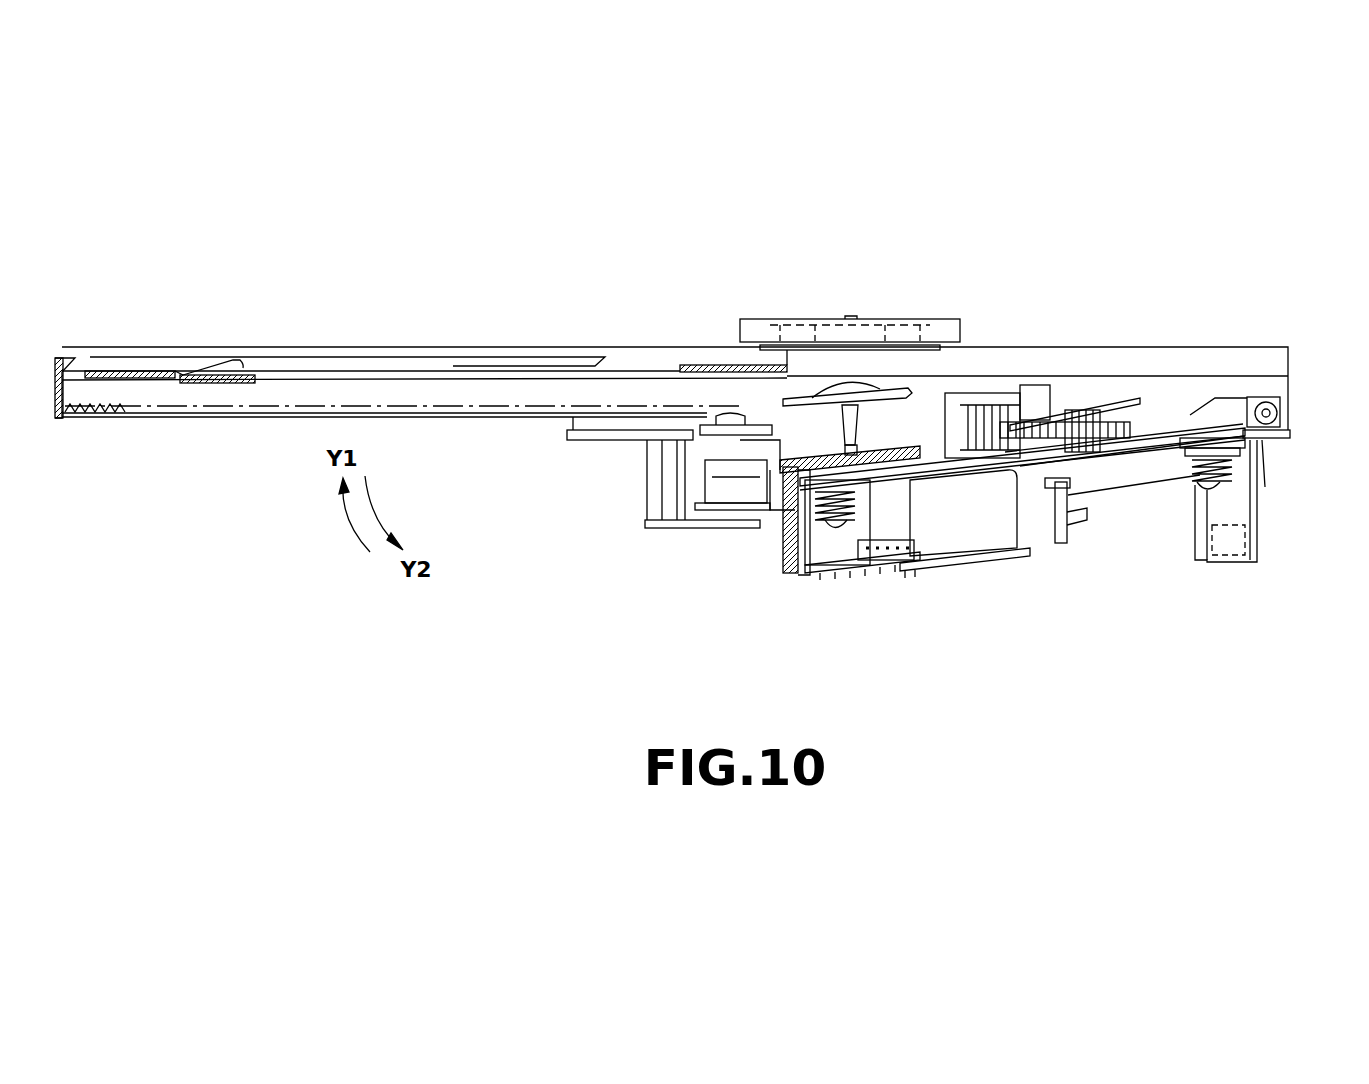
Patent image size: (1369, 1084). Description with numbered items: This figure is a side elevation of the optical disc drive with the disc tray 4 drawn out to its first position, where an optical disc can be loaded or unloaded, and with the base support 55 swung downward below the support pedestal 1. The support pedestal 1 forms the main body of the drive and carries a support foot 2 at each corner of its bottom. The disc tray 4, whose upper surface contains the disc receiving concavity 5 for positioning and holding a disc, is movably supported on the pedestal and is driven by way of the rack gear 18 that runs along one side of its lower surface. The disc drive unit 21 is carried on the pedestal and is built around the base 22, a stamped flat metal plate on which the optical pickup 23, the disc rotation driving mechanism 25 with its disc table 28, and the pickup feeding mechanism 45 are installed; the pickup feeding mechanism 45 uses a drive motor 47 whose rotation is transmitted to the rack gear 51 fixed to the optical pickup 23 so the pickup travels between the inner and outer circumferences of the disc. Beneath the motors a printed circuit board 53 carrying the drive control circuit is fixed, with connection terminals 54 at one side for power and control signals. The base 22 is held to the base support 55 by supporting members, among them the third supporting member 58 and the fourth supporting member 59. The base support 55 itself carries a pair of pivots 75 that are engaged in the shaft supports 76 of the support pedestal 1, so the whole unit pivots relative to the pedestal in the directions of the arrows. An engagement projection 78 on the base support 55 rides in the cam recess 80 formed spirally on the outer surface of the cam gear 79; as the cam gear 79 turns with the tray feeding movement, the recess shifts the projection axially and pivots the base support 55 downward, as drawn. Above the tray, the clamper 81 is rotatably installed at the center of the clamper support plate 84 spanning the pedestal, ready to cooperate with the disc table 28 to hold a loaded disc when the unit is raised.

The support pedestal 1 is at (1262, 448).
The support foot 2 is at (1262, 488).
The disc tray 4 is at (135, 362).
The disc receiving concavity 5 is at (178, 378).
The rack gear 18 is at (120, 414).
The disc drive unit 21 is at (1052, 558).
The base 22 is at (1127, 452).
The optical pickup 23 is at (1003, 393).
The disc rotation driving mechanism 25 is at (845, 425).
The disc table 28 is at (897, 398).
The pickup feeding mechanism 45 is at (1020, 445).
The drive motor 47 is at (970, 540).
The rack gear 51 is at (1057, 418).
The printed circuit board 53 is at (853, 575).
The connection terminals 54 is at (893, 560).
The base support 55 is at (785, 535).
The third supporting member 58 is at (825, 522).
The fourth supporting member 59 is at (1198, 485).
The pivot 75 is at (1283, 434).
The shaft support 76 is at (1283, 395).
The engagement projection 78 is at (770, 465).
The cam gear 79 is at (703, 447).
The cam recess 80 is at (770, 510).
The clamper 81 is at (797, 325).
The clamper support plate 84 is at (945, 330).